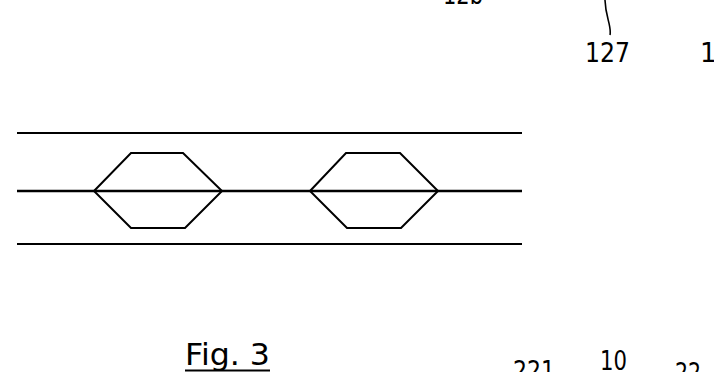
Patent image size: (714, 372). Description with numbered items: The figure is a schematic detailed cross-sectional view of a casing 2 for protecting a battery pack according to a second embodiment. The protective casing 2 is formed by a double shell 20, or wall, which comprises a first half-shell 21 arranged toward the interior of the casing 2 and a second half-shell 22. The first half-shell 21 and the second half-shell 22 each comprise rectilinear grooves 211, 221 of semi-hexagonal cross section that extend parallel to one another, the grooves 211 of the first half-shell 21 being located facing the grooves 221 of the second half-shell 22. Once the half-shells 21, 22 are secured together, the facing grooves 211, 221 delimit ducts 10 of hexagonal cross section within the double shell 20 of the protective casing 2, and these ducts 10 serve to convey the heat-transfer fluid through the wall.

The protective casing 2 is at (68, 82).
The double shell 20 is at (562, 183).
The first half-shell 21 is at (45, 222).
The second half-shell 22 is at (270, 170).
The duct 10 is at (178, 182).
The groove of the second half-shell 221 is at (148, 153).
The groove of the first half-shell 211 is at (148, 228).